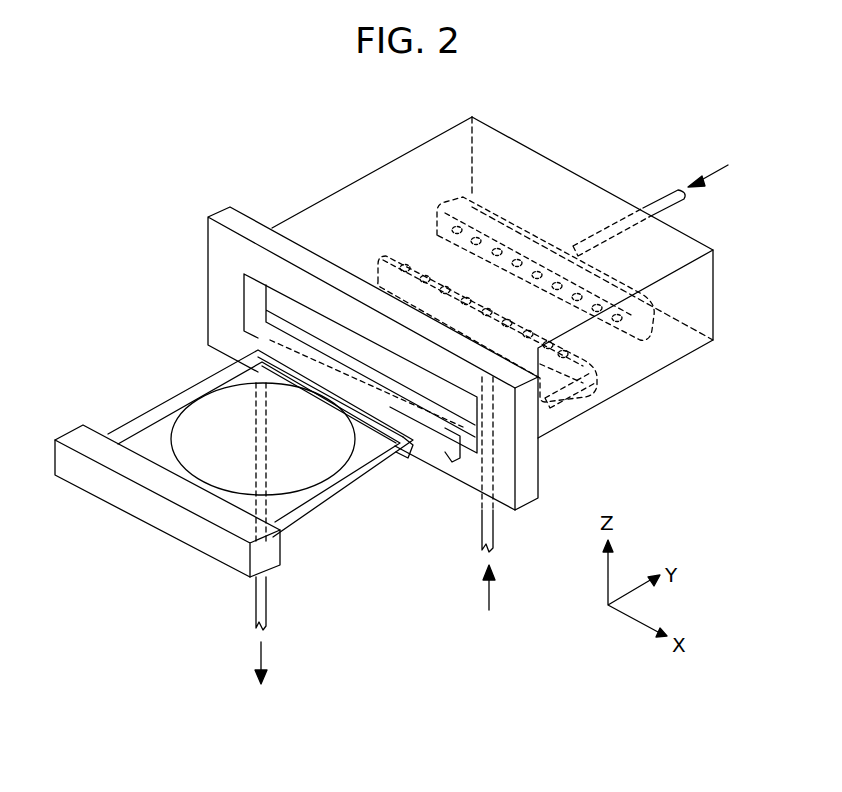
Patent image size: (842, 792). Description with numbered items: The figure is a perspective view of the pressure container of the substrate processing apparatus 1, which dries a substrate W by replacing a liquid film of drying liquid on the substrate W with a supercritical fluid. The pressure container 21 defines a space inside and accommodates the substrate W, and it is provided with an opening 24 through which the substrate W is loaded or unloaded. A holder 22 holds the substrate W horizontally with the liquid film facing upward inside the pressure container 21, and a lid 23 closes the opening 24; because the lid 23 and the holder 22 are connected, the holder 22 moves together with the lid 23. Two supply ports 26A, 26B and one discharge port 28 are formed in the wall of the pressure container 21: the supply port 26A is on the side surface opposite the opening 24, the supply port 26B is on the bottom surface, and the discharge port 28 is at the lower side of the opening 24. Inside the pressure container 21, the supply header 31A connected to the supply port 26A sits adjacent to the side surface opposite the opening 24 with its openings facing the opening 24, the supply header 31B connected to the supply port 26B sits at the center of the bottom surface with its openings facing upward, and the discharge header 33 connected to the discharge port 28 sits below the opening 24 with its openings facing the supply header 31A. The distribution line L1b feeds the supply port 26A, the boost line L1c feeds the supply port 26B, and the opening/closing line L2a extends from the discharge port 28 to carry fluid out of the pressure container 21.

The substrate processing apparatus 1 is at (173, 138).
The pressure container 21 is at (393, 188).
The holder 22 is at (320, 494).
The lid 23 is at (137, 502).
The opening 24 is at (304, 316).
The supply port 26A is at (577, 245).
The supply port 26B is at (552, 412).
The discharge port 28 is at (255, 356).
The supply header 31A is at (465, 197).
The supply header 31B is at (598, 372).
The discharge header 33 is at (447, 462).
The substrate W is at (212, 419).
The distribution line L1b is at (668, 205).
The boost line L1c is at (494, 530).
The opening/closing line L2a is at (266, 598).